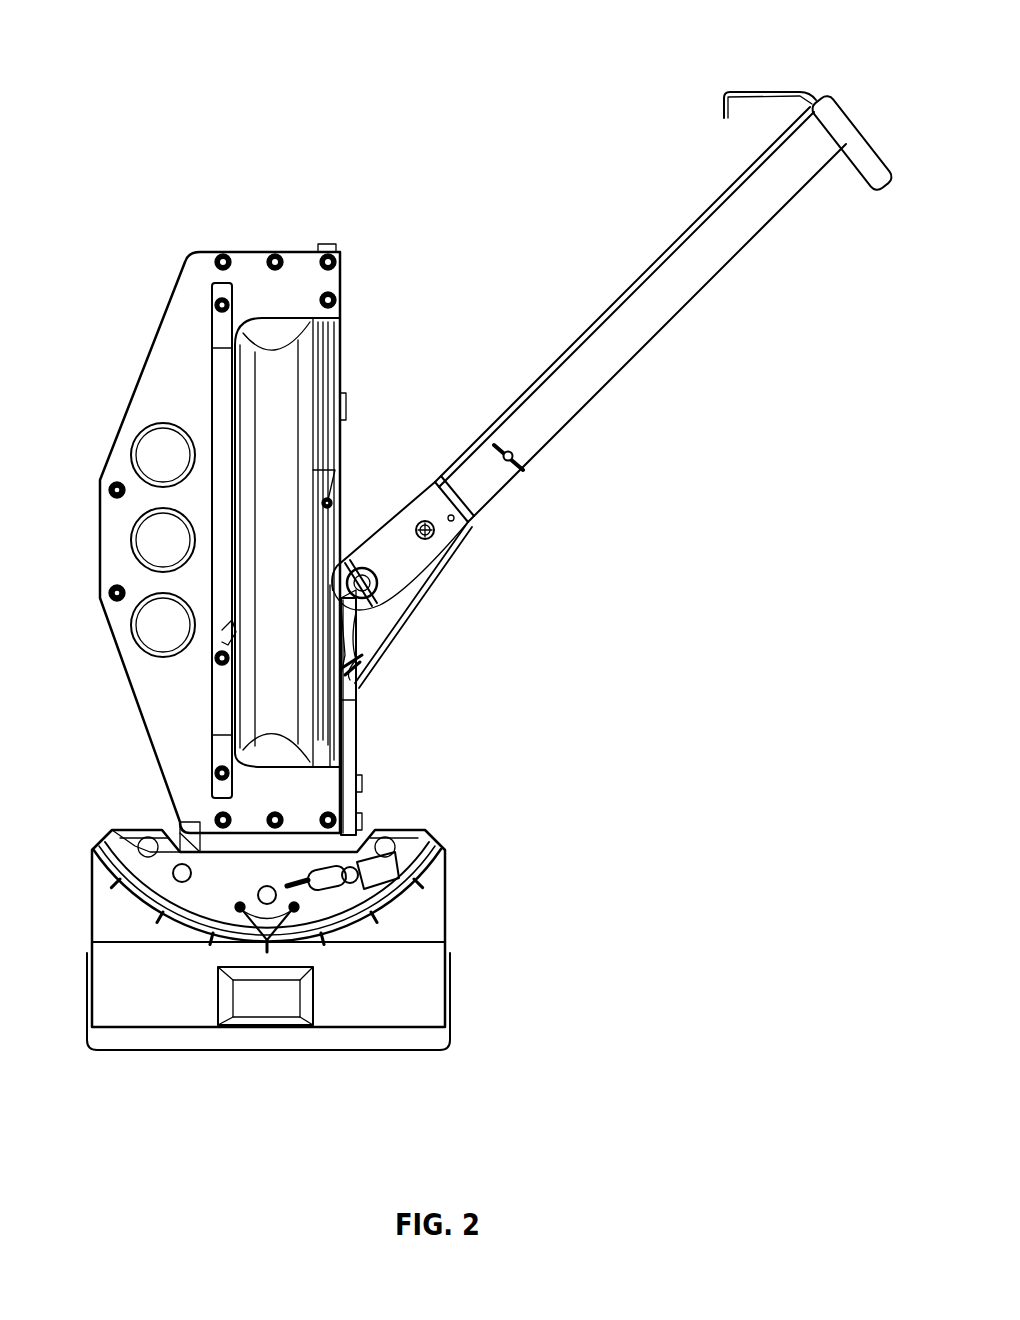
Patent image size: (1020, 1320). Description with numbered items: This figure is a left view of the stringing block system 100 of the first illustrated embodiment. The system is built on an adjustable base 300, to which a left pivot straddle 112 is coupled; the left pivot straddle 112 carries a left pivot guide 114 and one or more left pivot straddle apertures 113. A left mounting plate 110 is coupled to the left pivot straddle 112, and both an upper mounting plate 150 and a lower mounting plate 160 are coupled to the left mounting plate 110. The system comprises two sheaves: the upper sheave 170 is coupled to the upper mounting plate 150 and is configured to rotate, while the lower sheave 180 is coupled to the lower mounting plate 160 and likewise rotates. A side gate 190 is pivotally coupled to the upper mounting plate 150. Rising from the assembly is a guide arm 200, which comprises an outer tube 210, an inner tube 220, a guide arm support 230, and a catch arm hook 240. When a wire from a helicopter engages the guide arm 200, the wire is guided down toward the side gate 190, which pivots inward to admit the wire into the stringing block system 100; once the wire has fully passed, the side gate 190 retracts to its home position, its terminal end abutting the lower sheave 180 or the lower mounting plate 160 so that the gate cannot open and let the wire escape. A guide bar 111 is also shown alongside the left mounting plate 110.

The stringing block system 100 is at (536, 43).
The left mounting plate 110 is at (165, 368).
The guide bar 111 is at (213, 305).
The left pivot straddle 112 is at (172, 860).
The left pivot straddle apertures 113 is at (182, 887).
The left pivot guide 114 is at (281, 925).
The upper mounting plate 150 is at (343, 358).
The lower mounting plate 160 is at (357, 713).
The upper sheave 170 is at (290, 457).
The lower sheave 180 is at (283, 612).
The side gate 190 is at (392, 588).
The guide arm 200 is at (672, 483).
The outer tube 210 is at (701, 335).
The inner tube 220 is at (442, 532).
The guide arm support 230 is at (378, 610).
The catch arm hook 240 is at (800, 98).
The adjustable base 300 is at (463, 820).